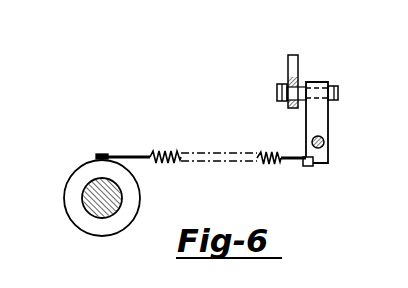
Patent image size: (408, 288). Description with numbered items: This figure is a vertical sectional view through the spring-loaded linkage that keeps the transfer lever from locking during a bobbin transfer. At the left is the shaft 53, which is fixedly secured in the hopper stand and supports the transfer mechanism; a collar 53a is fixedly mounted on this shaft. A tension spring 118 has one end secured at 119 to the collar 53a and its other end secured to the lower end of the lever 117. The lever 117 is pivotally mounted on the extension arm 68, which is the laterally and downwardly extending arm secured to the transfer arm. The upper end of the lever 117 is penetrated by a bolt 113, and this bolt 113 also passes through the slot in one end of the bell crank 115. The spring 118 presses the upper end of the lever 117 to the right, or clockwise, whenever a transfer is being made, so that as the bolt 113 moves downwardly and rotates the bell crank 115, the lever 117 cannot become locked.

The shaft 53 is at (86, 193).
The collar 53a is at (66, 213).
The extension arm 68 is at (325, 141).
The bolt 113 is at (337, 88).
The bell crank 115 is at (290, 55).
The lever 117 is at (328, 116).
The tension spring 118 is at (176, 152).
The spring attachment point 119 is at (100, 154).